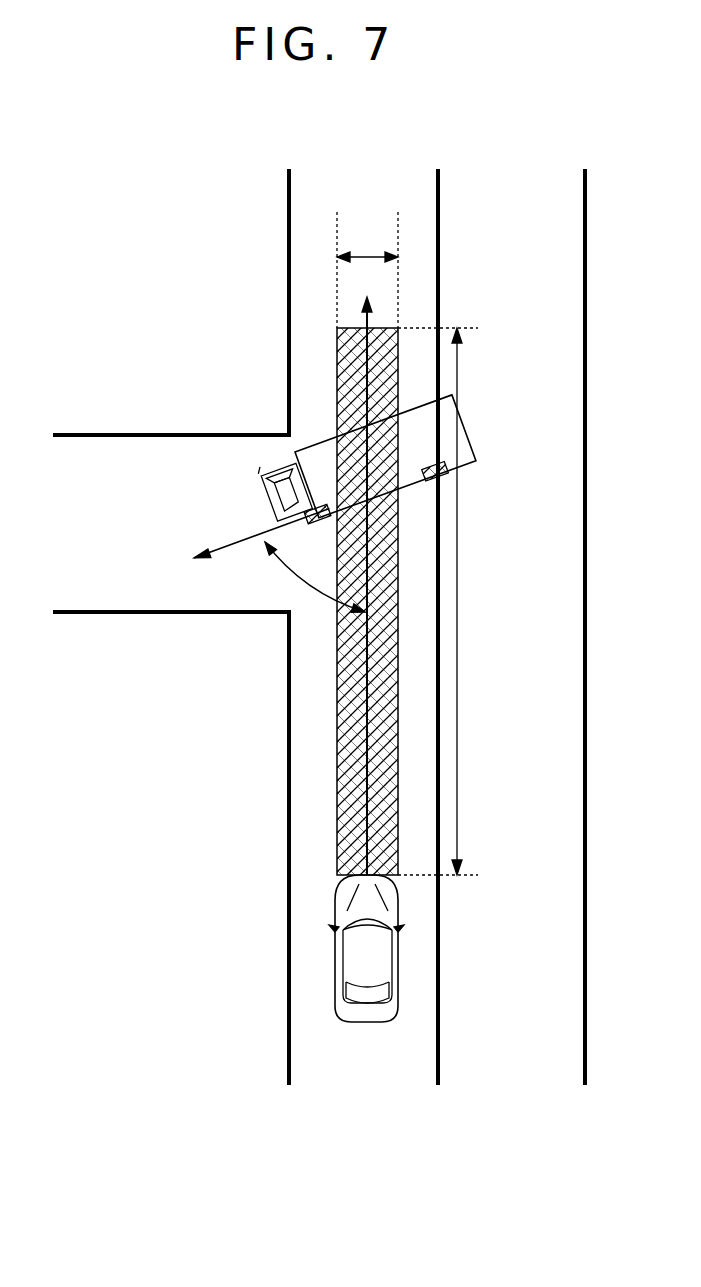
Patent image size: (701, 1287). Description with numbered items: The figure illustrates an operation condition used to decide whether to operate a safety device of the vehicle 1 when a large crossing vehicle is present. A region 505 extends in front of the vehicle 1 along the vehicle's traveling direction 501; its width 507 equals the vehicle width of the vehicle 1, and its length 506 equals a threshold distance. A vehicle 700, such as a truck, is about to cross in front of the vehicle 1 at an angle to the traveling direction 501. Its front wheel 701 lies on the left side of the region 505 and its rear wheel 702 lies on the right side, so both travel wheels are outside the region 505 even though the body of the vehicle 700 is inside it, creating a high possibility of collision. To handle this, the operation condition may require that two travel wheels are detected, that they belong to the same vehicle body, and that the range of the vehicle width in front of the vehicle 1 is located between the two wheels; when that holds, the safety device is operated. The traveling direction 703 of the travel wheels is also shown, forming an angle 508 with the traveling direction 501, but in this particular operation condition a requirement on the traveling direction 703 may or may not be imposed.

The vehicle 1 is at (399, 953).
The traveling direction of the vehicle 501 is at (367, 800).
The region 505 is at (350, 713).
The length of the region 506 is at (457, 632).
The width of the region 507 is at (367, 255).
The angle 508 is at (300, 582).
The vehicle 700 is at (313, 447).
The front wheel 701 is at (313, 523).
The rear wheel 702 is at (440, 478).
The traveling direction of the travel wheels 703 is at (227, 543).